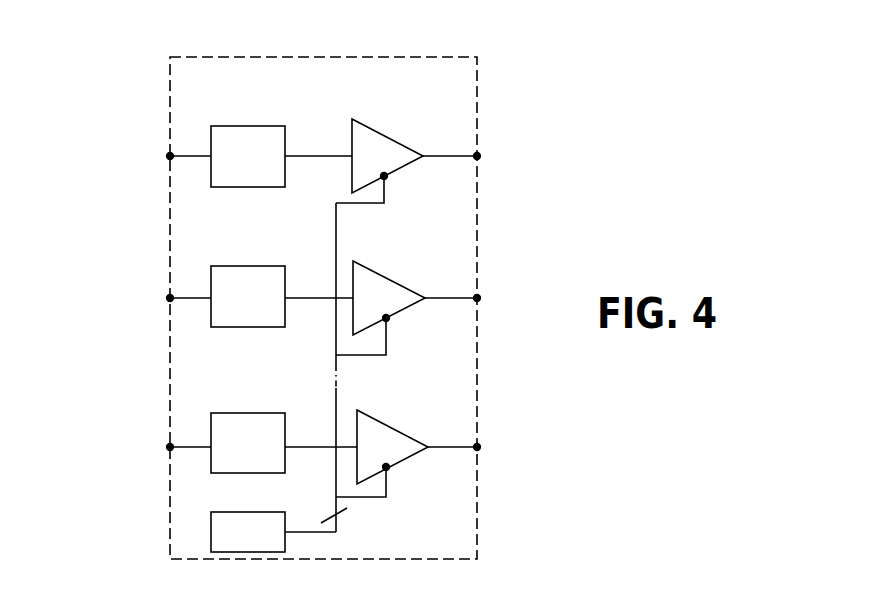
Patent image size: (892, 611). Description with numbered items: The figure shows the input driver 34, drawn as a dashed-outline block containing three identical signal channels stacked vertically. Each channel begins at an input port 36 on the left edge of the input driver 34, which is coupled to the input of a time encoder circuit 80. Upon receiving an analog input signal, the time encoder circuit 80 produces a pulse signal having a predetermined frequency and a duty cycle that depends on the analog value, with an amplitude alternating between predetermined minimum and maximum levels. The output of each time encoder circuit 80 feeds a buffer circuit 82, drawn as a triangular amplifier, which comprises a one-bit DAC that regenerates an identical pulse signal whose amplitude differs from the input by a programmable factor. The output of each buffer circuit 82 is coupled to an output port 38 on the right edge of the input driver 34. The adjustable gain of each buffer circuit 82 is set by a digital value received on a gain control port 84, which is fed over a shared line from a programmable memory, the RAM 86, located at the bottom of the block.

The input driver 34 is at (478, 92).
The input port 36 is at (166, 156).
The output port 38 is at (481, 156).
The time encoder circuit 80 is at (250, 126).
The buffer circuit 82 is at (407, 140).
The gain control port 84 is at (391, 178).
The RAM 86 is at (260, 552).